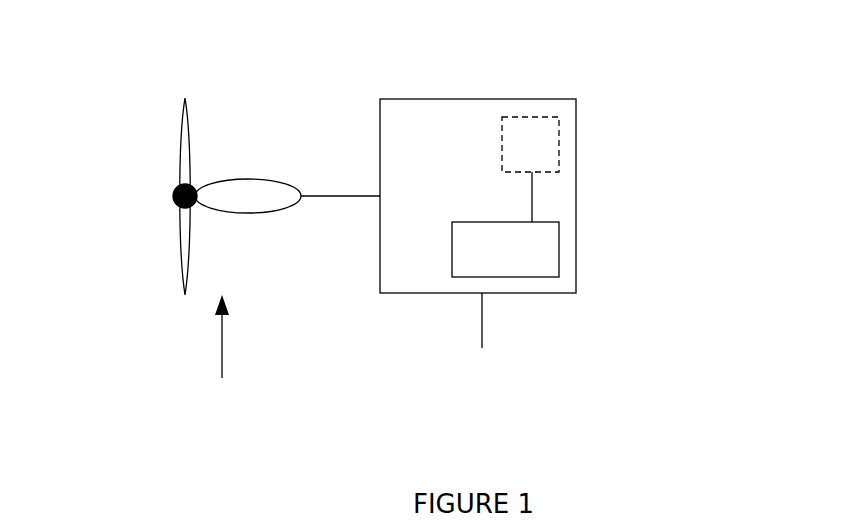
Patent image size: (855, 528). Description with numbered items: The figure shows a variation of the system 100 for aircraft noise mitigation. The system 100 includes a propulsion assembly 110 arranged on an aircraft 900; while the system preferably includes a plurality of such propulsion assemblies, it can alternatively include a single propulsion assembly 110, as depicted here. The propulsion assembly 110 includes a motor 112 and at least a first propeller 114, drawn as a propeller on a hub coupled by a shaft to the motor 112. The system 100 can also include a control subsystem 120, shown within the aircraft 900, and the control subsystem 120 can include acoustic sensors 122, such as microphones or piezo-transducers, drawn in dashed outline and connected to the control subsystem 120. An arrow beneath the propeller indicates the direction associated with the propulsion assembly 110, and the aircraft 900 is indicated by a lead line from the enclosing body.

The system for noise mitigation 100 is at (124, 80).
The propulsion assembly 110 is at (221, 350).
The motor 112 is at (252, 192).
The first propeller 114 is at (185, 157).
The control subsystem 120 is at (530, 253).
The acoustic sensors 122 is at (545, 141).
The aircraft 900 is at (479, 338).